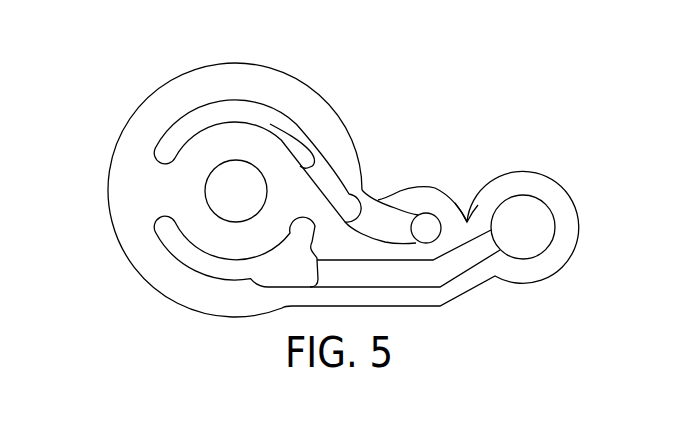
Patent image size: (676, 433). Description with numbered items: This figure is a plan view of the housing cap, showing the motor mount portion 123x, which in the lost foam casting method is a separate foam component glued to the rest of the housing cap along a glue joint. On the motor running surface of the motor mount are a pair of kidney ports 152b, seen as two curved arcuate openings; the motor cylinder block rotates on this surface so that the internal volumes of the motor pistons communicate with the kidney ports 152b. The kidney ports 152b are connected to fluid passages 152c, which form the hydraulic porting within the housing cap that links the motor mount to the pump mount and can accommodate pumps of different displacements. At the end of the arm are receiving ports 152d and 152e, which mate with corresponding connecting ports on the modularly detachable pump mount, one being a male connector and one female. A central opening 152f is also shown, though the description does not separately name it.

The motor mount portion 123x is at (233, 62).
The kidney ports 152b is at (173, 110).
The fluid passages 152c is at (371, 273).
The receiving port 152d is at (443, 173).
The receiving port 152e is at (552, 163).
The central hole 152f is at (208, 208).